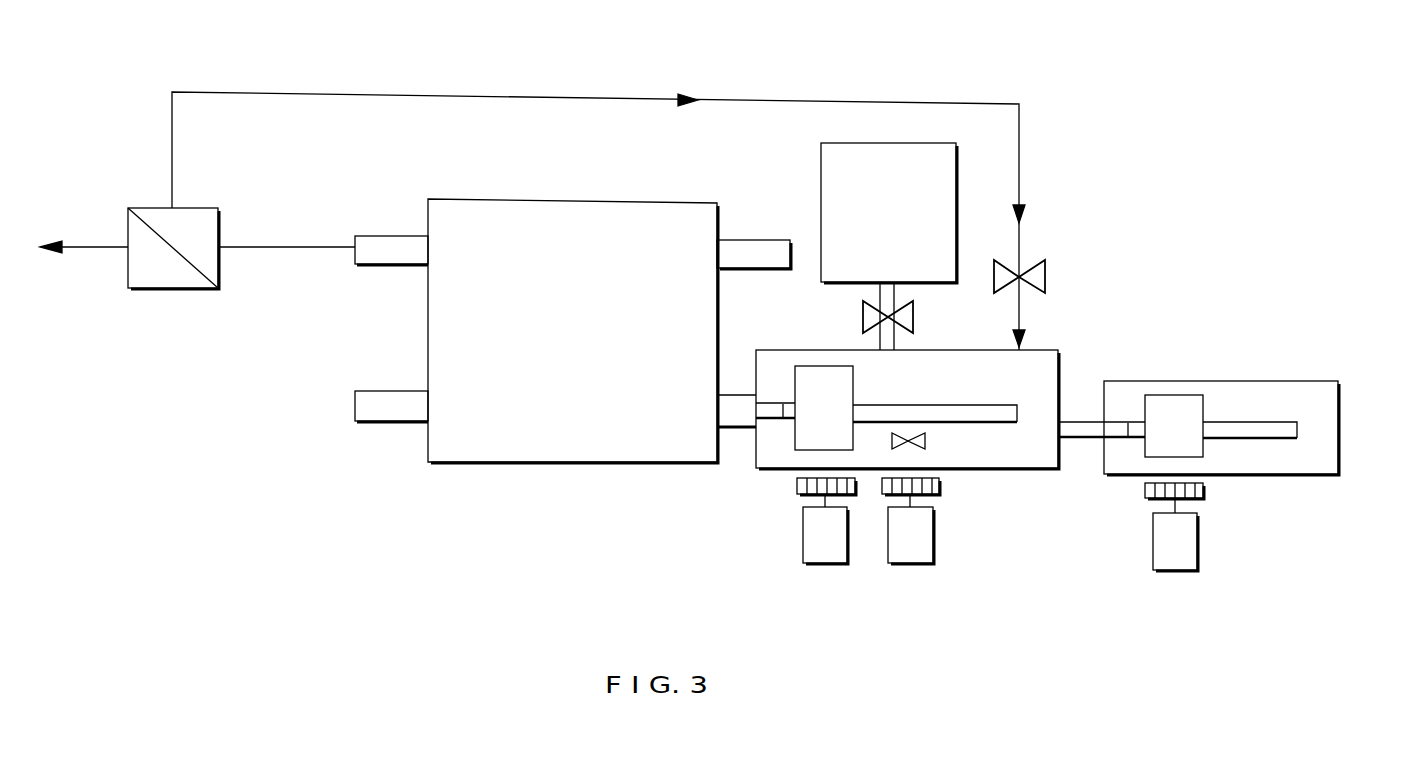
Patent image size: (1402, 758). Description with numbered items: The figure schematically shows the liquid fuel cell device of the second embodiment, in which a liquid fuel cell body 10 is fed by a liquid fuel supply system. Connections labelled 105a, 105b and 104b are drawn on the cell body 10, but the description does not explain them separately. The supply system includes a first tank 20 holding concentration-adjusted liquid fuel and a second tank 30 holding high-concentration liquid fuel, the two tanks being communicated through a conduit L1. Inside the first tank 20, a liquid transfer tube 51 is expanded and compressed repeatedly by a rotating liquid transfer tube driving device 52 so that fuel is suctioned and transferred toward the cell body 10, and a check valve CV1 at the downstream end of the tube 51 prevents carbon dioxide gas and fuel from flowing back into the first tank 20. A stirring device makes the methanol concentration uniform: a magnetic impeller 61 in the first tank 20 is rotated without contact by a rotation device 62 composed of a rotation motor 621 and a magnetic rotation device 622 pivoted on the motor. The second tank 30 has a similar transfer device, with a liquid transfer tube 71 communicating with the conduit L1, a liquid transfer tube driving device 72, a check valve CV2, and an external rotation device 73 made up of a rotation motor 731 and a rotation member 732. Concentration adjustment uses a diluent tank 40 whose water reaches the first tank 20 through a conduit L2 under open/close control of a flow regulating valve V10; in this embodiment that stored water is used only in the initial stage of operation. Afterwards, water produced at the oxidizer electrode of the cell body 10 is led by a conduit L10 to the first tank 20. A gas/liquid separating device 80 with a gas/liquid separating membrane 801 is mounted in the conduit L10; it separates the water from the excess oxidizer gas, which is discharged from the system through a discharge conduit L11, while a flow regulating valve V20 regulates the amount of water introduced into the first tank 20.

The liquid fuel cell body 10 is at (523, 199).
The gate port 105a is at (757, 240).
The gate port 105b is at (390, 236).
The connection port 104b is at (385, 425).
The gas/liquid separating device 80 is at (162, 257).
The gas/liquid separating membrane 801 is at (156, 232).
The discharge conduit L11 is at (88, 258).
The conduit L10 is at (578, 96).
The diluent tank 40 is at (957, 197).
The conduit L2 is at (880, 291).
The flow regulating valve V10 is at (915, 317).
The flow regulating valve V20 is at (1048, 278).
The first tank 20 is at (907, 437).
The check valve CV1 is at (792, 406).
The liquid transfer tube driving device 52 is at (794, 445).
The liquid transfer tube 51 is at (977, 405).
The magnetic impeller 61 is at (925, 440).
The rotation device 62 is at (900, 576).
The rotation motor 621 is at (934, 540).
The magnetic rotation device 622 is at (940, 485).
The conduit L1 is at (1080, 440).
The second tank 30 is at (1249, 399).
The check valve CV2 is at (1132, 421).
The liquid transfer tube driving device 72 is at (1185, 395).
The liquid transfer tube 71 is at (1272, 422).
The rotation device 73 is at (1207, 582).
The rotation motor 731 is at (1197, 545).
The rotation member 732 is at (1205, 490).